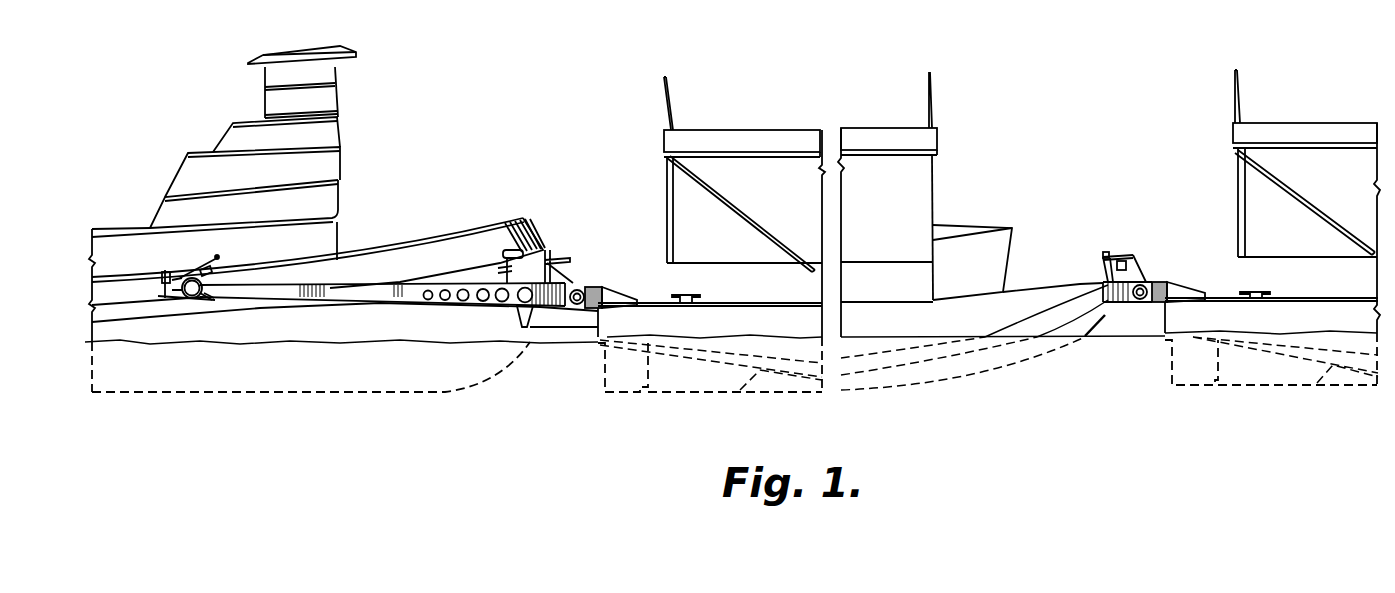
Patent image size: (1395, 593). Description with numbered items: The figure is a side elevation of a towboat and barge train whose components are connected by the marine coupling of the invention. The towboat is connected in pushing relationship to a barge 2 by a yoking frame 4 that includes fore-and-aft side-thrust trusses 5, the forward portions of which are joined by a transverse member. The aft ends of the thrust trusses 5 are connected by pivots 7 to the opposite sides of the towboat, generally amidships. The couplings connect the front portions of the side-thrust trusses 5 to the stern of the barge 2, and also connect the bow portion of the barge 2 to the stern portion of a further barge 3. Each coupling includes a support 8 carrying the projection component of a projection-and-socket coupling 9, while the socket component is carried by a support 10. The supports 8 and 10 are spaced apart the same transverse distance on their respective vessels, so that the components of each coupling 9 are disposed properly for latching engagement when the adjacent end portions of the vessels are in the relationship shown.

The barge 2 is at (919, 187).
The barge 3 is at (1260, 193).
The yoking frame 4 is at (452, 325).
The side-thrust trusses 5 is at (379, 297).
The pivots 7 is at (200, 300).
The support 8 is at (613, 287).
The projection-and-socket coupling 9 is at (579, 284).
The support 10 is at (1128, 290).